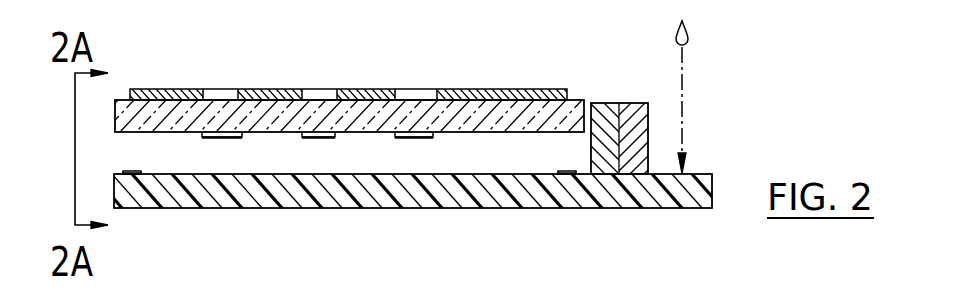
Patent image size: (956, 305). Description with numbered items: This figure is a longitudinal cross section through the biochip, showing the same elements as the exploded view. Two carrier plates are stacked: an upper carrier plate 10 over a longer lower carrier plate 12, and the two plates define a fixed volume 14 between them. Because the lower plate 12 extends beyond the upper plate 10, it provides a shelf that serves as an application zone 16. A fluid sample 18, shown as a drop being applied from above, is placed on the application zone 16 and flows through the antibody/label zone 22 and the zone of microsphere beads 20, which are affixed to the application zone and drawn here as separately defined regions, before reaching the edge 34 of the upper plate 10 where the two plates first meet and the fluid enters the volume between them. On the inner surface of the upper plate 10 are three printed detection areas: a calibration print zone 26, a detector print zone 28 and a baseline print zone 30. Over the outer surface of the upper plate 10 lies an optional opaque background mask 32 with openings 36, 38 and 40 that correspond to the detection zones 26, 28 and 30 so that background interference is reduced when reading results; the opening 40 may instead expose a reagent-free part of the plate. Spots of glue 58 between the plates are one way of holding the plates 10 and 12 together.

The upper carrier plate 10 is at (114, 112).
The lower carrier plate 12 is at (113, 193).
The fixed volume 14 is at (188, 164).
The application zone 16 is at (523, 173).
The fluid sample 18 is at (697, 97).
The microsphere beads 20 is at (603, 168).
The label zone 22 is at (634, 168).
The calibration print zone 26 is at (220, 138).
The detector print zone 28 is at (320, 138).
The baseline print zone 30 is at (413, 138).
The background mask 32 is at (520, 94).
The edge 34 is at (624, 152).
The opening 36 is at (220, 94).
The opening 38 is at (318, 94).
The opening 40 is at (417, 94).
The spot of glue 58 is at (138, 153).